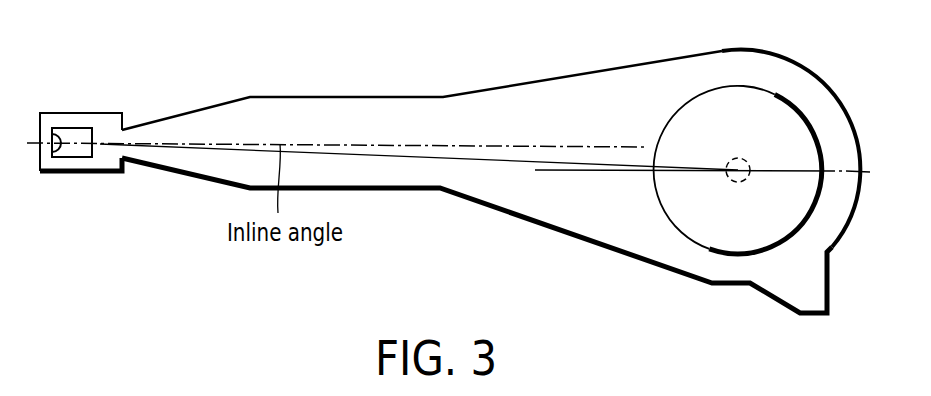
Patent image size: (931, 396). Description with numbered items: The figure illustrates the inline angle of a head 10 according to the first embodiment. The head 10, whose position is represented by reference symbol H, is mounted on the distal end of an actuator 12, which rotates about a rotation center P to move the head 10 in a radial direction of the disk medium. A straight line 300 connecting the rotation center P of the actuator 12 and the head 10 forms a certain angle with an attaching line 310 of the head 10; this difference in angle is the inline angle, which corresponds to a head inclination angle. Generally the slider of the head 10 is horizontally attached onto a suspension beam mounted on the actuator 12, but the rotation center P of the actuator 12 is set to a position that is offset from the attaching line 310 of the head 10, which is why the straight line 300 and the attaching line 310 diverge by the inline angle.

The head 10 is at (70, 128).
The actuator 12 is at (321, 97).
The attaching line 310 is at (200, 140).
The straight line 300 is at (527, 162).
The rotation center P is at (724, 182).
The head position H is at (72, 182).